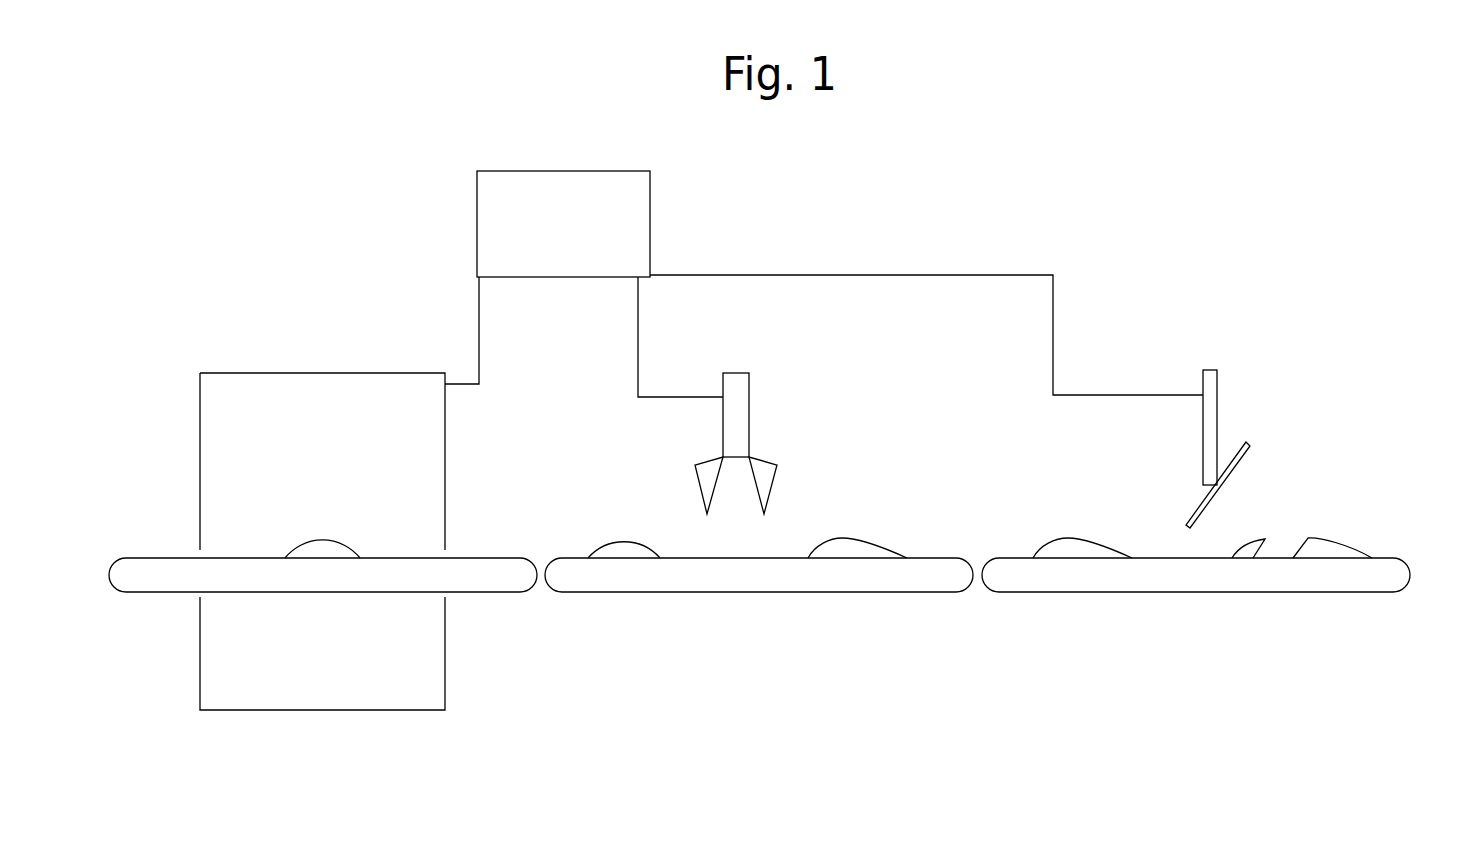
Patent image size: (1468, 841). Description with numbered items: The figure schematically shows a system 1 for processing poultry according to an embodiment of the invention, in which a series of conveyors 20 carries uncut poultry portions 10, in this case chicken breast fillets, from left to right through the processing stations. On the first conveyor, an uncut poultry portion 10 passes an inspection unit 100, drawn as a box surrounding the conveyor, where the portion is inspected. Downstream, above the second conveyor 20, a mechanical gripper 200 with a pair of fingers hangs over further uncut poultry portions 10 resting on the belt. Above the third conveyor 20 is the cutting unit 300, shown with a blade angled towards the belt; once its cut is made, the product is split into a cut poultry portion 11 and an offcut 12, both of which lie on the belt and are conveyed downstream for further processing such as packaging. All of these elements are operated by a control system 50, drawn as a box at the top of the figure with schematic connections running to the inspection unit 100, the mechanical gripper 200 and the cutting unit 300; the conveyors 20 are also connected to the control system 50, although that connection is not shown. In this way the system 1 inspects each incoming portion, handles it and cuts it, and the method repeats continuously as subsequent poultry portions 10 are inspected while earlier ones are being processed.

The system 1 is at (1080, 240).
The uncut poultry portions 10 is at (312, 540).
The cut poultry portion 11 is at (1327, 538).
The offcut 12 is at (1250, 538).
The conveyors 20 is at (260, 592).
The control system 50 is at (512, 170).
The inspection unit 100 is at (262, 372).
The mechanical gripper 200 is at (750, 415).
The cutting unit 300 is at (1217, 385).